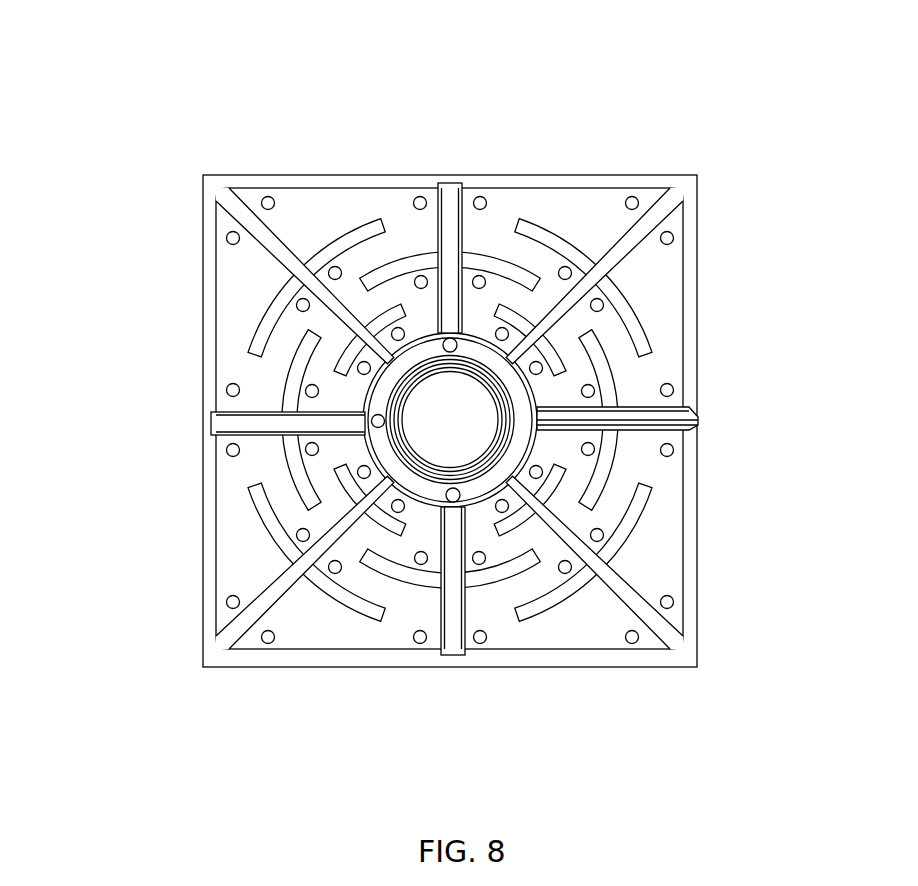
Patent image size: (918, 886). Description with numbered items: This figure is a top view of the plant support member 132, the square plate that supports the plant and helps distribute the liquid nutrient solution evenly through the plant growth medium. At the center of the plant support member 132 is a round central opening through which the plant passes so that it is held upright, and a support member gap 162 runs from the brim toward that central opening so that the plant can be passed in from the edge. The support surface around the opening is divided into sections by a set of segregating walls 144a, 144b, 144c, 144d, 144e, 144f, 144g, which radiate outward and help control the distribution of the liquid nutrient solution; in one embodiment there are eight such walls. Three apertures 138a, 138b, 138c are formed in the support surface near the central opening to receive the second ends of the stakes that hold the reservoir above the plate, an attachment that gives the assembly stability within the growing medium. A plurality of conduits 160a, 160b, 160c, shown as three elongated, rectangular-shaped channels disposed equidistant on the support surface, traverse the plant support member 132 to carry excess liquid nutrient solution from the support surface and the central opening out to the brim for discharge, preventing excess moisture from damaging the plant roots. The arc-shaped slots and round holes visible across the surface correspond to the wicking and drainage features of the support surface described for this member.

The plant support member 132 is at (160, 146).
The aperture 138a is at (459, 343).
The aperture 138b is at (370, 402).
The aperture 138c is at (448, 503).
The segregating wall 144a is at (300, 205).
The segregating wall 144b is at (243, 518).
The segregating wall 144c is at (243, 518).
The segregating wall 144d is at (548, 612).
The segregating wall 144e is at (652, 522).
The segregating wall 144f is at (677, 238).
The segregating wall 144g is at (633, 198).
The conduit 160a is at (464, 193).
The conduit 160b is at (231, 410).
The conduit 160c is at (454, 656).
The support member gap 162 is at (692, 411).